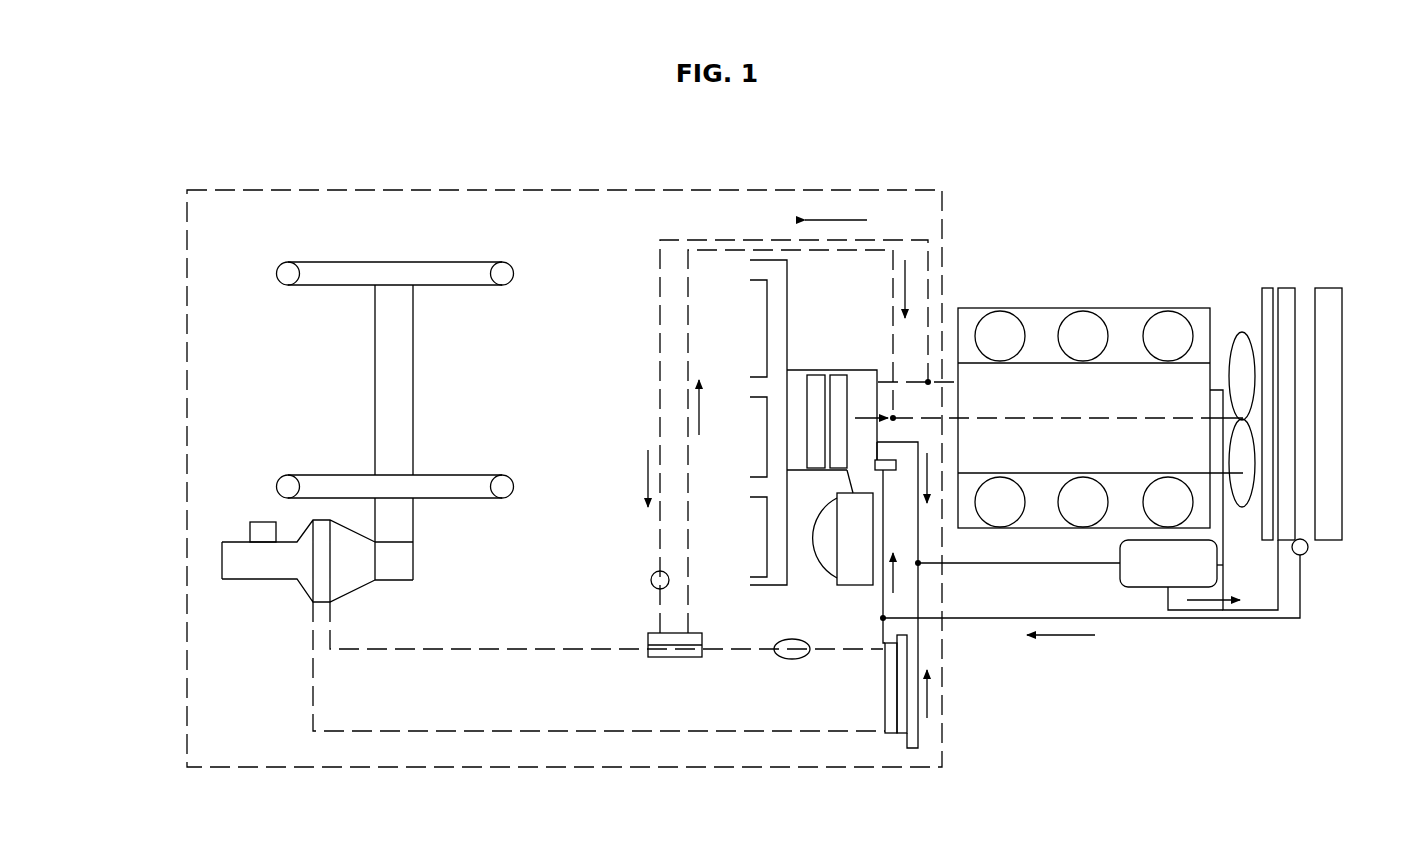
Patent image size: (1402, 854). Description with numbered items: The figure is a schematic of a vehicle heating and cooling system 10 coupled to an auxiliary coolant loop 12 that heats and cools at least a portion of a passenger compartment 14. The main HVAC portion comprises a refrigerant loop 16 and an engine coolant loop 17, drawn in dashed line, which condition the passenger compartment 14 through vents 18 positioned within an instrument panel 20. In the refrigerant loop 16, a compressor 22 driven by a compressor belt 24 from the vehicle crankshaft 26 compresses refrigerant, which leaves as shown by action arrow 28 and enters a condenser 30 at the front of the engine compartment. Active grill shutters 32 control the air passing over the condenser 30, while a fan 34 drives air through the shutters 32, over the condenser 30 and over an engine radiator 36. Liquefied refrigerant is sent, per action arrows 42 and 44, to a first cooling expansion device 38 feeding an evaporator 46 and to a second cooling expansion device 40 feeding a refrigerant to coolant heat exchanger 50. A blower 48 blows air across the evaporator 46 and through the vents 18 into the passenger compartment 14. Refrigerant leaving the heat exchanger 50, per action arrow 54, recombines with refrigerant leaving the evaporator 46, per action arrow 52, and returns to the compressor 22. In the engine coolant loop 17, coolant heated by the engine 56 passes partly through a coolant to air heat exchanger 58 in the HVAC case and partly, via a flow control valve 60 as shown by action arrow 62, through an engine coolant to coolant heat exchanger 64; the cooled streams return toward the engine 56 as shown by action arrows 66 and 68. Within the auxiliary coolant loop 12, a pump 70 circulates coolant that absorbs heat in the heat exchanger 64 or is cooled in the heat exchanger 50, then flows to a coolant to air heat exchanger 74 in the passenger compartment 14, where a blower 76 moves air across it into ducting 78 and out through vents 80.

The vehicle heating and cooling system 10 is at (1081, 279).
The auxiliary coolant loop 12 is at (358, 740).
The passenger compartment 14 is at (187, 370).
The refrigerant loop 16 is at (1264, 623).
The engine coolant loop 17 is at (932, 251).
The vents 18 is at (752, 305).
The instrument panel 20 is at (787, 283).
The compressor 22 is at (1122, 570).
The compressor belt 24 is at (1225, 527).
The crankshaft 26 is at (1220, 418).
The action arrow 28 is at (1207, 610).
The condenser 30 is at (1285, 288).
The active grill shutters 32 is at (1343, 325).
The fan 34 is at (1242, 332).
The engine radiator 36 is at (1268, 288).
The first cooling expansion device 38 is at (887, 460).
The second cooling expansion device 40 is at (905, 641).
The action arrow 42 is at (897, 578).
The action arrow 44 is at (882, 645).
The evaporator 46 is at (838, 373).
The blower 48 is at (837, 567).
The refrigerant to coolant heat exchanger 50 is at (892, 735).
The action arrow 52 is at (925, 560).
The action arrow 54 is at (929, 703).
The engine 56 is at (1140, 308).
The coolant to air heat exchanger 58 is at (815, 373).
The flow control valve 60 is at (651, 578).
The action arrow 62 is at (640, 462).
The engine coolant to coolant heat exchanger 64 is at (670, 658).
The action arrow 66 is at (907, 273).
The action arrow 68 is at (857, 440).
The pump 70 is at (790, 660).
The coolant to air heat exchanger 74 is at (313, 585).
The blower 76 is at (258, 522).
The ducting 78 is at (413, 378).
The vents 80 is at (510, 265).